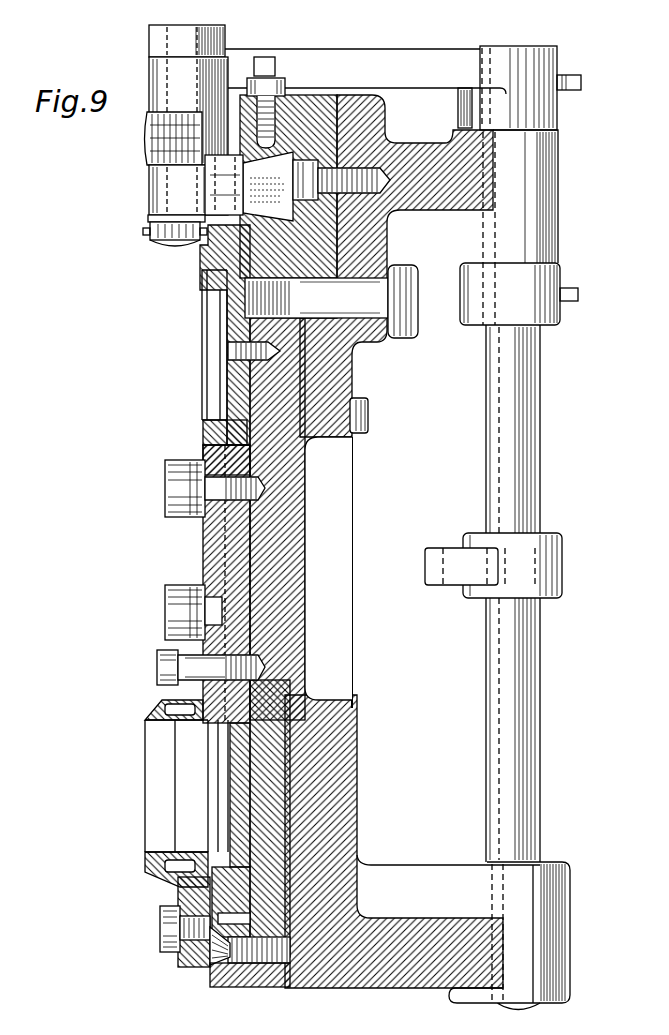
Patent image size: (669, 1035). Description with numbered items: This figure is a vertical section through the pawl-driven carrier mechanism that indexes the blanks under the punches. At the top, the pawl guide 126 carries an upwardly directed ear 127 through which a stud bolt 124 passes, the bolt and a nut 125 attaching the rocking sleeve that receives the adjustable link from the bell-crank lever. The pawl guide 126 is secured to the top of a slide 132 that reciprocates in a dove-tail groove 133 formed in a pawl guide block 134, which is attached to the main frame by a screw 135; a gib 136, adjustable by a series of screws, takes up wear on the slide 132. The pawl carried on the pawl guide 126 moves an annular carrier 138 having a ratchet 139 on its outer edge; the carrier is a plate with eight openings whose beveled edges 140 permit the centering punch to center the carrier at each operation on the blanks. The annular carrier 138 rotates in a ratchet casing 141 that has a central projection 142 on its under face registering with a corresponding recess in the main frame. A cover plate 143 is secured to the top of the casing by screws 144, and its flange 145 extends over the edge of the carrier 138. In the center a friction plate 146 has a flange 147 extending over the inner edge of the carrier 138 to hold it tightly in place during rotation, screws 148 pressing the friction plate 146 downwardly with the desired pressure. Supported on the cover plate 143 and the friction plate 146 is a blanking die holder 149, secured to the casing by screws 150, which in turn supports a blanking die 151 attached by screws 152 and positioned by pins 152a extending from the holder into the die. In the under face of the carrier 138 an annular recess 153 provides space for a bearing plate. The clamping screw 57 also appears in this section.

The clamping screw 57 is at (264, 60).
The gib 136 is at (282, 160).
The pawl guide block 134 is at (292, 128).
The dove-tail groove 133 is at (306, 118).
The slide 132 is at (322, 160).
The screw 135 is at (372, 170).
The pawl guide 126 is at (178, 197).
The ear 127 is at (148, 212).
The nut 125 is at (151, 238).
The stud bolt 124 is at (200, 250).
The annular carrier 138 is at (205, 268).
The beveled edges 140 is at (203, 353).
The ratchet 139 is at (218, 368).
The flange 147 is at (203, 445).
The screws 148 is at (168, 480).
The friction plate 146 is at (203, 527).
The ratchet casing 141 is at (213, 553).
The central projection 142 is at (293, 523).
The screws 150 is at (165, 682).
The pins 152a is at (160, 708).
The screws 152 is at (175, 726).
The blanking die 151 is at (158, 805).
The flange 145 is at (213, 906).
The blanking die holder 149 is at (170, 947).
The screws 144 is at (212, 966).
The cover plate 143 is at (218, 986).
The annular recess 153 is at (232, 808).